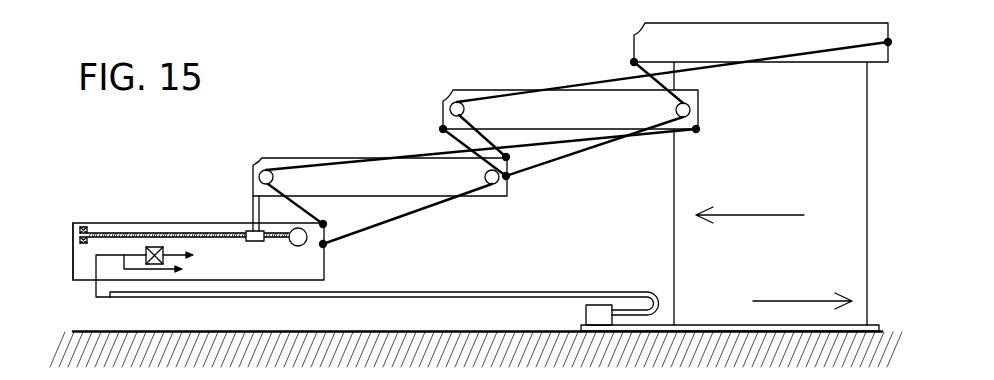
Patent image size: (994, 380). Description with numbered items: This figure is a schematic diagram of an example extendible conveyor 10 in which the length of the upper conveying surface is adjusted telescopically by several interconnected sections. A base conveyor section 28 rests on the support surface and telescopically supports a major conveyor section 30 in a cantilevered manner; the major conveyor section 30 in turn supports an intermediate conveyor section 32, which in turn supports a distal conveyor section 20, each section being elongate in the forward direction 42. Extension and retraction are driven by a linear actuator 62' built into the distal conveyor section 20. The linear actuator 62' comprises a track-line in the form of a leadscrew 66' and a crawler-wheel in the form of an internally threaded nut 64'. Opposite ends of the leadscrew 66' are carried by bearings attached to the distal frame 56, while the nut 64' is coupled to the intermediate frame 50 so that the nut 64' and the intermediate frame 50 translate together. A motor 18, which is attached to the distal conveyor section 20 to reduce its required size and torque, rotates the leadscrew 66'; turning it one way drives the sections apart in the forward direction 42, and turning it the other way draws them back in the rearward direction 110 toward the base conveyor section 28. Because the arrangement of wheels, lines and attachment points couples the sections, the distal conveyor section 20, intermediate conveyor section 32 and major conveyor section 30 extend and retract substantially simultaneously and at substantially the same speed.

The conveyor 10 is at (298, 75).
The motor 18 is at (304, 245).
The distal conveyor section 20 is at (98, 223).
The base conveyor section 28 is at (633, 47).
The major conveyor section 30 is at (442, 118).
The intermediate conveyor section 32 is at (253, 182).
The forward direction 42 is at (735, 215).
The intermediate frame 50 is at (300, 158).
The distal frame 56 is at (75, 222).
The linear actuator 62' is at (194, 213).
The internally threaded nut 64' is at (273, 254).
The leadscrew 66' is at (188, 193).
The rearward direction 110 is at (807, 301).